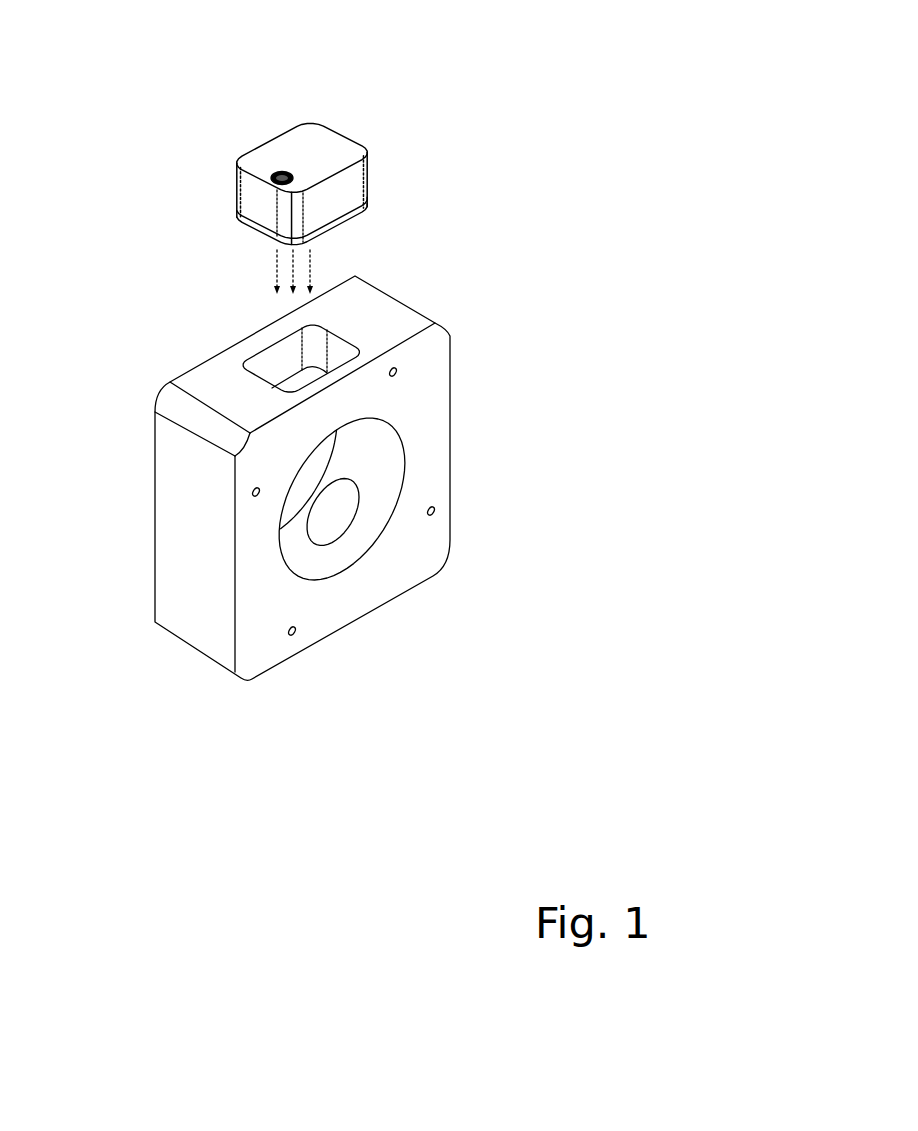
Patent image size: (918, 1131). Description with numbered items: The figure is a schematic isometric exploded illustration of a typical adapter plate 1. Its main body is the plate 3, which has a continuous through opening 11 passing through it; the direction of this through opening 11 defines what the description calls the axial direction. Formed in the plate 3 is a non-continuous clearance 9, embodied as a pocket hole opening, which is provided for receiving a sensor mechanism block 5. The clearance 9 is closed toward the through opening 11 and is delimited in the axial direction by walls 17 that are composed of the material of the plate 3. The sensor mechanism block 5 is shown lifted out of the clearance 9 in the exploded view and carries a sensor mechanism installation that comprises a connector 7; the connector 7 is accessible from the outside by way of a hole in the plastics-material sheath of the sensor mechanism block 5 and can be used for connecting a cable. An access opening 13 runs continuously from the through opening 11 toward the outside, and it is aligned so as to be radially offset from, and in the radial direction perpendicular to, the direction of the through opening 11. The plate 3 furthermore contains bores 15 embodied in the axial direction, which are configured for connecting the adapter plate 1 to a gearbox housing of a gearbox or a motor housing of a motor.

The adapter plate 1 is at (537, 104).
The plate 3 is at (155, 547).
The sensor mechanism block 5 is at (238, 163).
The connector 7 is at (269, 180).
The clearance 9 is at (232, 360).
The through opening 11 is at (405, 455).
The access opening 13 is at (353, 530).
The bores 15 is at (398, 373).
The walls 17 is at (273, 328).